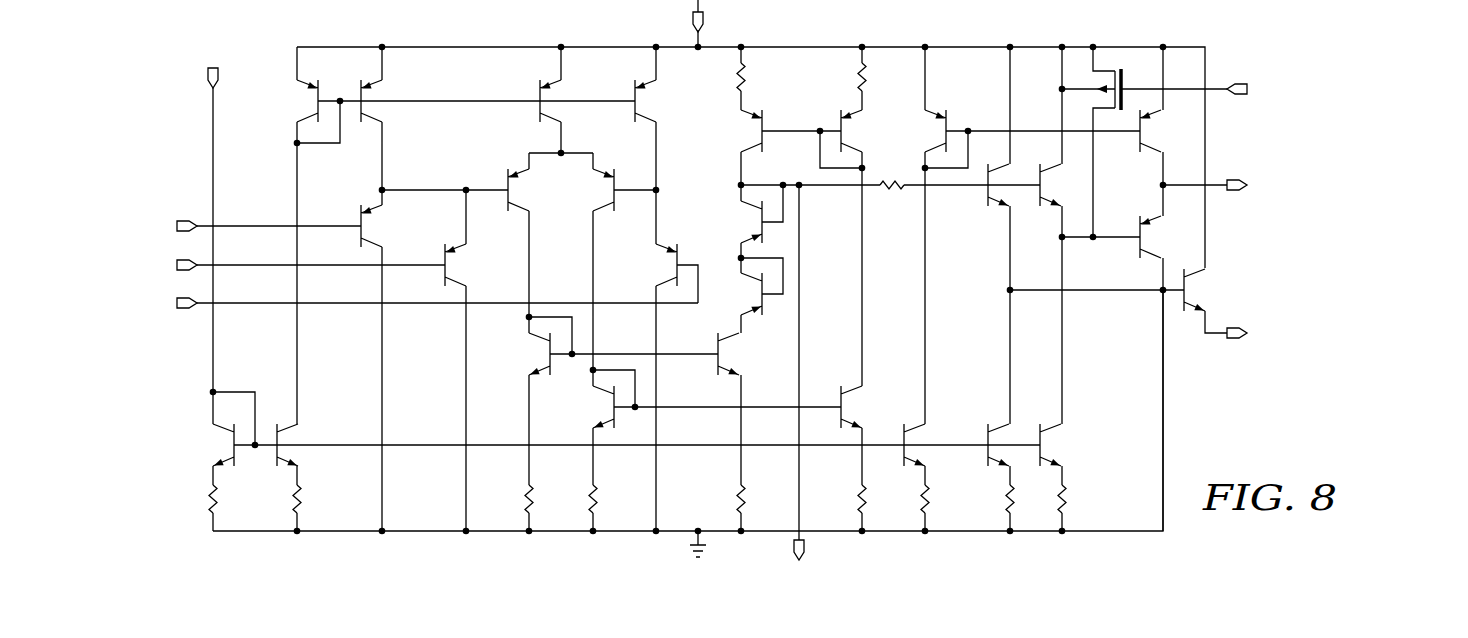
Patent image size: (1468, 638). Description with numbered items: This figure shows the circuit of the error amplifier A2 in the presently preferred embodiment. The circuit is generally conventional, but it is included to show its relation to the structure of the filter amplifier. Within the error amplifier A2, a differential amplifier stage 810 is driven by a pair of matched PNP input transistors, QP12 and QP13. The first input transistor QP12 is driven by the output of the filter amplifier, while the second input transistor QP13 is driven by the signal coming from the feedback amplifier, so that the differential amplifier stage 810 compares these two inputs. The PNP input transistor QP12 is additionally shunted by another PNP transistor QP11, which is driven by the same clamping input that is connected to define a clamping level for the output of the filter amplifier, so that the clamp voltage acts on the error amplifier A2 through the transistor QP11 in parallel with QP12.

The differential amplifier stage 810 is at (582, 200).
The error amplifier A2 is at (772, 282).
The PNP transistor QP11 is at (311, 226).
The PNP input transistor QP12 is at (353, 265).
The PNP input transistor QP13 is at (655, 273).